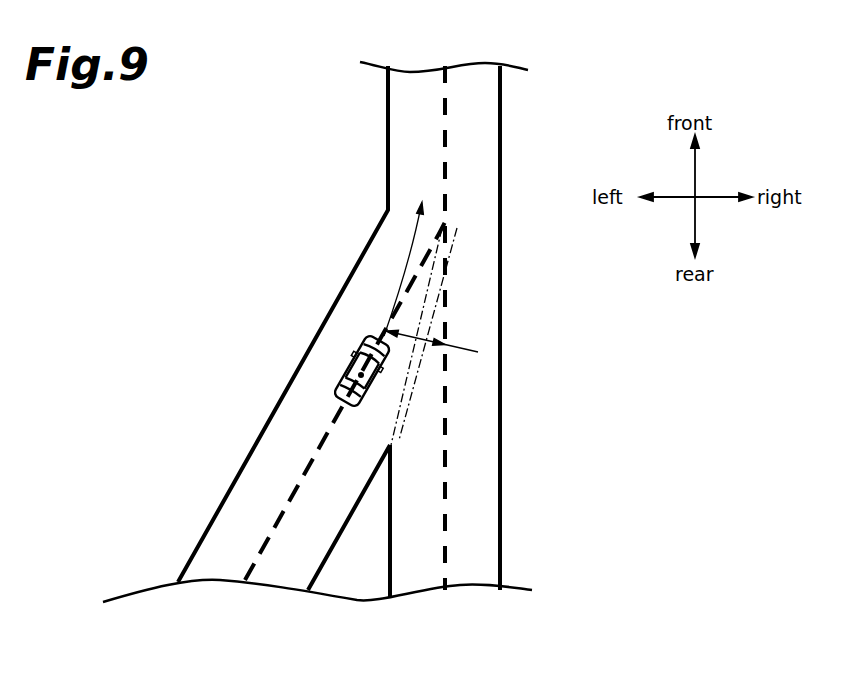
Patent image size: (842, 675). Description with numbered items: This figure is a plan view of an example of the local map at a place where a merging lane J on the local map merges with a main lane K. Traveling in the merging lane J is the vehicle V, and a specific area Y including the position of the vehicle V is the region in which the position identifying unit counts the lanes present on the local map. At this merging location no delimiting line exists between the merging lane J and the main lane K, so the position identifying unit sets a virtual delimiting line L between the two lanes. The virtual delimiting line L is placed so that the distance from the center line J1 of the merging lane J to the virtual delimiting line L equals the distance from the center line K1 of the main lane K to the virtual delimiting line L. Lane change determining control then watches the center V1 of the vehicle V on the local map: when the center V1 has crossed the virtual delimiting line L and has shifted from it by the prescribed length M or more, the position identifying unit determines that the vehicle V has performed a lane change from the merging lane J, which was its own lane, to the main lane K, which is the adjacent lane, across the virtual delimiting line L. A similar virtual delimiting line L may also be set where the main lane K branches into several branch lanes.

The specific area Y is at (358, 168).
The vehicle V is at (365, 330).
The center of the vehicle V1 is at (360, 375).
The merging lane J is at (255, 495).
The center line of the merging lane J1 is at (323, 443).
The main lane K is at (465, 456).
The center line of the main lane K1 is at (449, 415).
The prescribed length M is at (432, 338).
The virtual delimiting line L is at (390, 447).